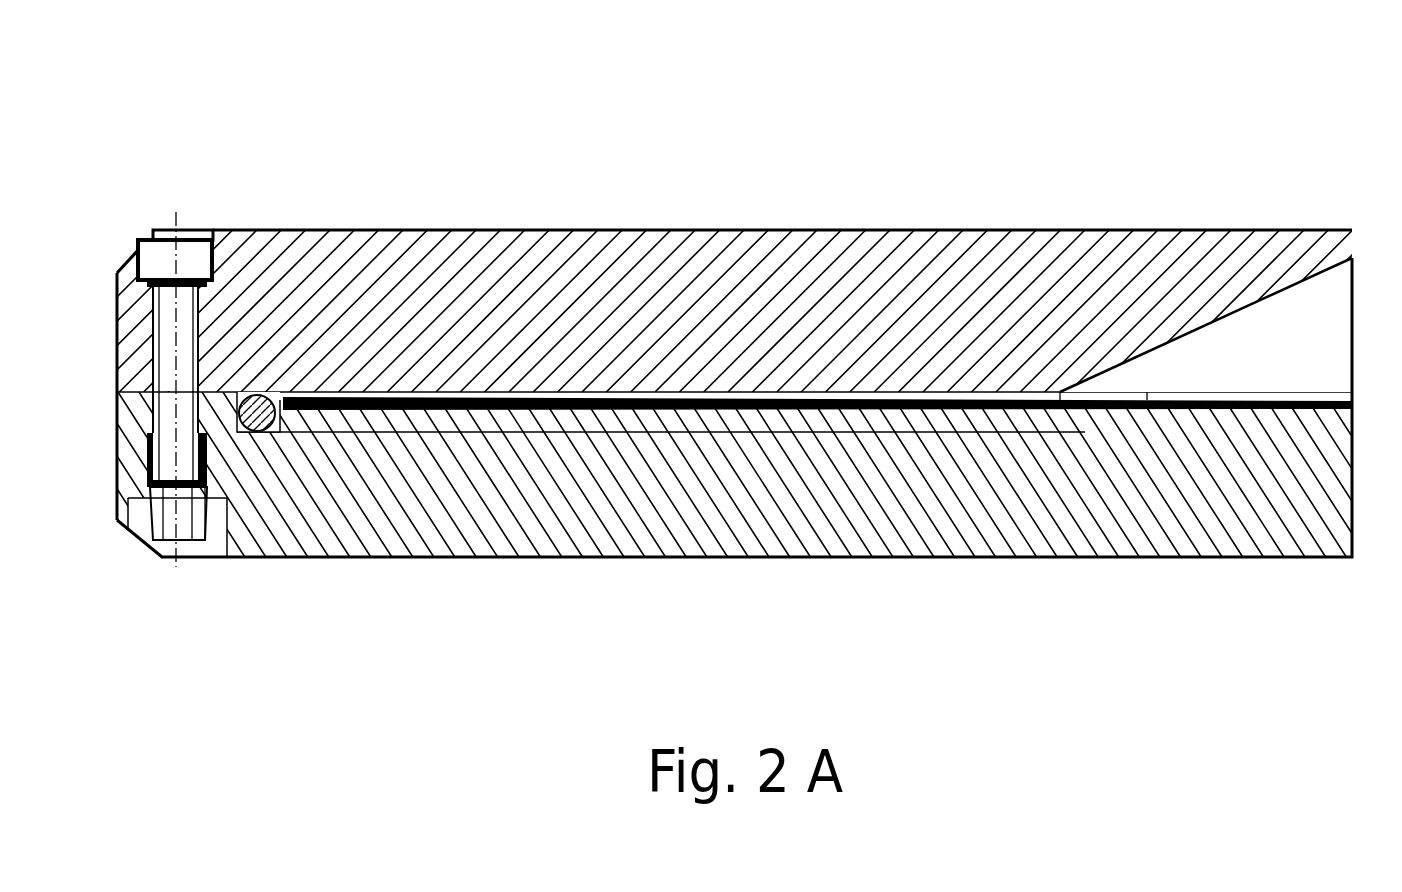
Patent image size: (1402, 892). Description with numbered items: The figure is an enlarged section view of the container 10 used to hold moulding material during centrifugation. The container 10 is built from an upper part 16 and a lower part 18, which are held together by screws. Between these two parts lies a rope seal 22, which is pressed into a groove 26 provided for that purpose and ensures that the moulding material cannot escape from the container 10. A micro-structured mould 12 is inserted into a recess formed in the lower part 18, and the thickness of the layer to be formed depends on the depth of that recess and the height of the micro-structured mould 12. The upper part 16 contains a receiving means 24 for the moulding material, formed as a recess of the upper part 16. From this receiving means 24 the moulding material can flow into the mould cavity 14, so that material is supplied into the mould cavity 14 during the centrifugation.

The container 10 is at (1041, 78).
The micro-structured mould 12 is at (663, 412).
The mould cavity 14 is at (748, 400).
The upper part 16 is at (478, 307).
The lower part 18 is at (466, 503).
The rope seal 22 is at (228, 392).
The receiving means for the moulding material 24 is at (1280, 338).
The groove 26 is at (290, 433).